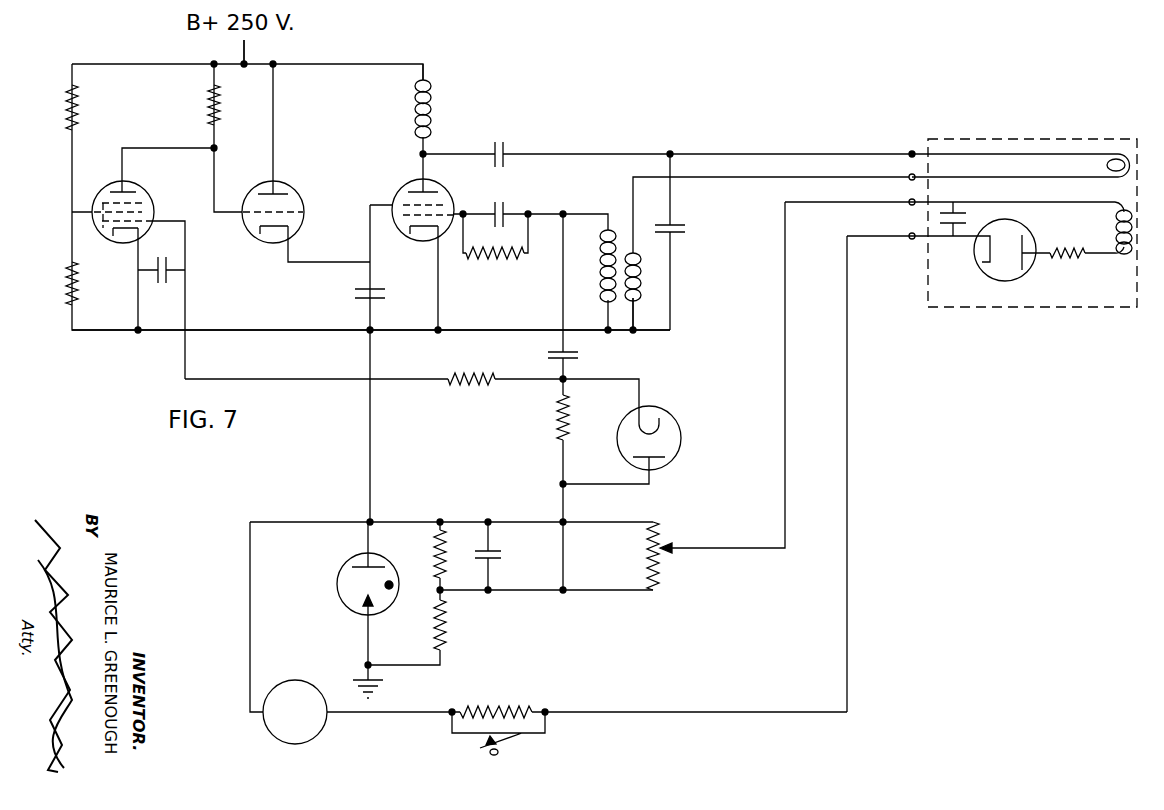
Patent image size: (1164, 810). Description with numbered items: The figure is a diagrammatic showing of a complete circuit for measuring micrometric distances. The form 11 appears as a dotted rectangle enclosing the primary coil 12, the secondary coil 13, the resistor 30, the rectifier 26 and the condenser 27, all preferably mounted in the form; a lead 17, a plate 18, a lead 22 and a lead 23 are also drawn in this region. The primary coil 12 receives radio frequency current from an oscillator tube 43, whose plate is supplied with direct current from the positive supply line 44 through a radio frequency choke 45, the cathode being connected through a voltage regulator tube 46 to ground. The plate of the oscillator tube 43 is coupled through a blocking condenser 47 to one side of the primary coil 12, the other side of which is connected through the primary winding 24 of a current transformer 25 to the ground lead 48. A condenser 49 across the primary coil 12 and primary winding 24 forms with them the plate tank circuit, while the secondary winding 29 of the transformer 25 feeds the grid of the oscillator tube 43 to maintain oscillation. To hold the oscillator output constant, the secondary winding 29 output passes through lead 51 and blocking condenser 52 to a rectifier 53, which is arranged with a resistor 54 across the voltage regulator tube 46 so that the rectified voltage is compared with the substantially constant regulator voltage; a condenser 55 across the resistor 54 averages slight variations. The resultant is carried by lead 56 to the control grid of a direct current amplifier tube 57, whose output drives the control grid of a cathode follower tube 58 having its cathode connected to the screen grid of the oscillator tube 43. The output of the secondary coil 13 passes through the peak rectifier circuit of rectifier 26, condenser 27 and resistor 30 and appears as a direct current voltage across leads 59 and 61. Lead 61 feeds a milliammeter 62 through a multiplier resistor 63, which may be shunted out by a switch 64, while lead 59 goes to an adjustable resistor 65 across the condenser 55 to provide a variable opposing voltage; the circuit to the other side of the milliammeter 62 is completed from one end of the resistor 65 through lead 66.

The form 11 is at (1031, 139).
The primary coil 12 is at (1121, 150).
The secondary coil 13 is at (1132, 220).
The lead 17 is at (1015, 200).
The anode 18 is at (1028, 246).
The lead 22 is at (634, 302).
The lead 23 is at (598, 152).
The primary winding 24 is at (636, 262).
The current transformer 25 is at (623, 226).
The rectifier 26 is at (1013, 272).
The condenser 27 is at (950, 233).
The secondary winding 29 is at (600, 275).
The resistor 30 is at (1078, 257).
The oscillator tube 43 is at (445, 195).
The positive supply line 44 is at (248, 48).
The radio frequency choke 45 is at (435, 100).
The voltage regulator tube 46 is at (398, 576).
The blocking condenser 47 is at (507, 145).
The ground lead 48 is at (490, 332).
The condenser 49 is at (675, 224).
The lead 51 is at (561, 282).
The blocking condenser 52 is at (576, 350).
The rectifier 53 is at (680, 440).
The resistor 54 is at (445, 552).
The condenser 55 is at (497, 561).
The lead 56 is at (415, 381).
The direct current amplifier tube 57 is at (133, 191).
The cathode follower tube 58 is at (296, 196).
The lead 59 is at (784, 324).
The lead 61 is at (850, 327).
The milliammeter 62 is at (300, 690).
The multiplier resistor 63 is at (497, 708).
The switch 64 is at (508, 743).
The adjustable resistor 65 is at (656, 575).
The lead 66 is at (303, 521).